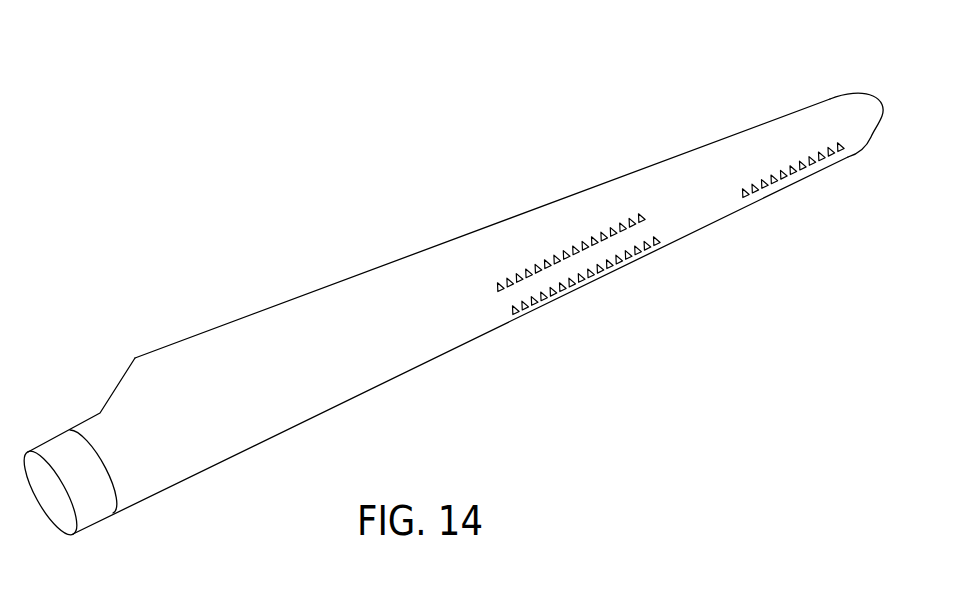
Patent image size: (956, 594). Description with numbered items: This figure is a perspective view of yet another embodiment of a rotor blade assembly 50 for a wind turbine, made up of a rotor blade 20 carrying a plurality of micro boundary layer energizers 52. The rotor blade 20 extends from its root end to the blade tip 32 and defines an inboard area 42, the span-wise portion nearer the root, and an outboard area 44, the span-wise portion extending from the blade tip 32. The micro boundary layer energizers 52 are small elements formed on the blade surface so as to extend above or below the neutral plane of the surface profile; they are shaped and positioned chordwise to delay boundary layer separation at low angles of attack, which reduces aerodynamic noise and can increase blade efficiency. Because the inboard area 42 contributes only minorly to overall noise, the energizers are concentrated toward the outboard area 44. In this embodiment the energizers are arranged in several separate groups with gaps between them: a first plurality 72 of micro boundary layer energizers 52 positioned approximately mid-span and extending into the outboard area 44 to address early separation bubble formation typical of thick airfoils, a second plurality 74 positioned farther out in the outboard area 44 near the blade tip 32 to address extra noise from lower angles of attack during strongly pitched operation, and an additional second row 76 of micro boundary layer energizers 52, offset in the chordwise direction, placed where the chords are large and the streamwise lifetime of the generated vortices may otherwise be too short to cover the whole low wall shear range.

The rotor blade 20 is at (562, 155).
The blade tip 32 is at (882, 95).
The inboard area 42 is at (150, 400).
The outboard area 44 is at (737, 150).
The rotor blade assembly 50 is at (260, 227).
The micro boundary layer energizers 52 is at (680, 237).
The first plurality of micro boundary layer energizers 72 is at (630, 260).
The second plurality of micro boundary layer energizers 74 is at (838, 154).
The second row of micro boundary layer energizers 76 is at (615, 226).